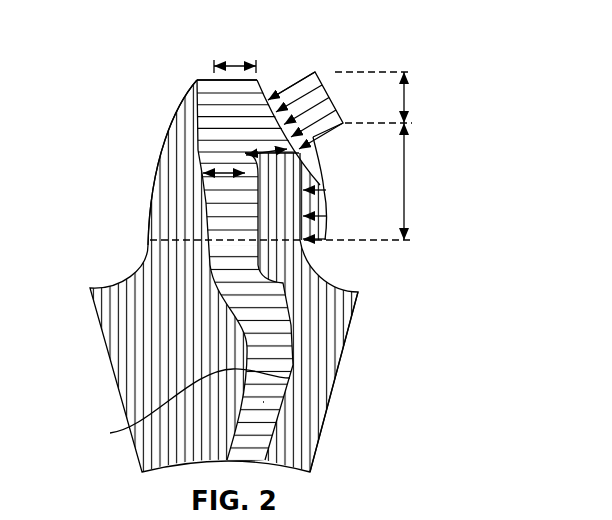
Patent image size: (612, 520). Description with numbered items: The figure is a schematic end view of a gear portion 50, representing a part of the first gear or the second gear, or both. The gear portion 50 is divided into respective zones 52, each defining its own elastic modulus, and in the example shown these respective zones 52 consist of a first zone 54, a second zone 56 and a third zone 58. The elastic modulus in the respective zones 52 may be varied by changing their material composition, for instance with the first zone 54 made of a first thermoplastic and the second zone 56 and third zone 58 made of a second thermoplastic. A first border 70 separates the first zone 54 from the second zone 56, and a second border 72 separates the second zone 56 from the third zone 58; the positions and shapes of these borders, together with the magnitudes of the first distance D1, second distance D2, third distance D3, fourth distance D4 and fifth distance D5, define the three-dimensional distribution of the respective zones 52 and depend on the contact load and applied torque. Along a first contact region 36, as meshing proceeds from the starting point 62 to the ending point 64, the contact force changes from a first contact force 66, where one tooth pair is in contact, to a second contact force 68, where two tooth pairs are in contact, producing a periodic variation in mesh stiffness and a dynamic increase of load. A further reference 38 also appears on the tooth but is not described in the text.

The first contact region 36 is at (302, 144).
The outer edge of first panel 38 is at (151, 140).
The gear portion 50 is at (101, 250).
The respective zones 52 is at (357, 346).
The first zone 54 is at (303, 343).
The second zone 56 is at (263, 402).
The third zone 58 is at (187, 347).
The starting point 62 is at (190, 240).
The ending point 64 is at (261, 79).
The first contact force 66 is at (327, 198).
The second contact force 68 is at (337, 70).
The first border 70 is at (290, 378).
The second border 72 is at (112, 433).
The first distance D1 is at (408, 97).
The second distance D2 is at (408, 183).
The third distance D3 is at (236, 62).
The fourth distance D4 is at (279, 111).
The fifth distance D5 is at (223, 170).